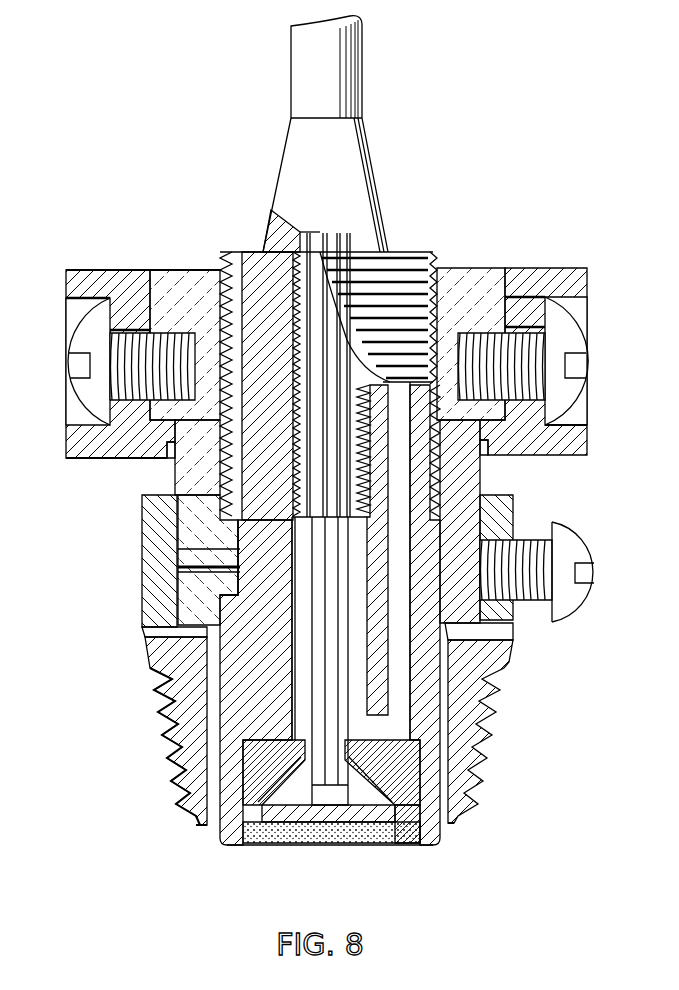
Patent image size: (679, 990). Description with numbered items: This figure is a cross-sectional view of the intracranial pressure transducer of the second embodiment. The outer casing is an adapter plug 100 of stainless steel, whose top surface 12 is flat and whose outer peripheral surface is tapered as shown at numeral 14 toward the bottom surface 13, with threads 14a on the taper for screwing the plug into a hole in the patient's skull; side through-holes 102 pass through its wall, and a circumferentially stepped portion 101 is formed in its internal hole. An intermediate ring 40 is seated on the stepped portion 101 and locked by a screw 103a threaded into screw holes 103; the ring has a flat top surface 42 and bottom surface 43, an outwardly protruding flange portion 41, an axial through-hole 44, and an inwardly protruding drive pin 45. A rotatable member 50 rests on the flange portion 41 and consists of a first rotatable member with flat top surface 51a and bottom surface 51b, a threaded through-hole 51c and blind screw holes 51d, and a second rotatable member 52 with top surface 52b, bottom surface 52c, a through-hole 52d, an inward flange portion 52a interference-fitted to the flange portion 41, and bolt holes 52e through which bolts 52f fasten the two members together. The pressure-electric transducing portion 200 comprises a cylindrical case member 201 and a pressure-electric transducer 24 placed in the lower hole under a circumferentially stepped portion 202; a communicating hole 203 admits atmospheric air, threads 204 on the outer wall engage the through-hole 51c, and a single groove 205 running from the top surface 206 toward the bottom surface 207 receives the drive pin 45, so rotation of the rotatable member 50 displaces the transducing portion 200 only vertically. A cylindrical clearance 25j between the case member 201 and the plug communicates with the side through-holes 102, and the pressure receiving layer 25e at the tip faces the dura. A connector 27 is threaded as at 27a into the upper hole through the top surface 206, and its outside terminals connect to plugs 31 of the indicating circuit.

The plugs 31 is at (350, 60).
The connector 27 is at (305, 145).
The threaded portion of connector 27a is at (295, 372).
The top surface 206 is at (265, 245).
The case member 201 is at (244, 256).
The pressure-electric transducing portion 200 is at (386, 252).
The threads 204 is at (432, 268).
The communicating hole 203 is at (398, 493).
The circumferentially stepped portion 202 is at (250, 745).
The bottom surface 207 is at (238, 848).
The pressure-electric transducer 24 is at (314, 845).
The pressure receiving layer 25e is at (385, 845).
The clearance 25j is at (450, 826).
The groove 205 is at (230, 600).
The through-hole 44 is at (220, 530).
The drive pin 45 is at (238, 562).
The adapter plug 100 is at (145, 556).
The circumferentially stepped portion 101 is at (185, 626).
The top surface 12 is at (150, 497).
The second rotatable member 52 is at (75, 275).
The flange portion 52a is at (160, 452).
The top surface 52b is at (110, 275).
The bottom surface 52c is at (74, 458).
The through-hole 52d is at (142, 282).
The bolt holes 52e is at (130, 325).
The bolts 52f is at (74, 385).
The rotatable member 50 is at (580, 284).
The top surface 51a is at (490, 268).
The bottom surface 51b is at (565, 410).
The through-hole 51c is at (440, 290).
The screw holes 51d is at (518, 325).
The top surface 42 is at (575, 430).
The flange portion 41 is at (493, 452).
The intermediate ring 40 is at (478, 478).
The screw holes 103 is at (500, 545).
The screw 103a is at (588, 546).
The bottom surface 43 is at (482, 628).
The side through-holes 102 is at (502, 655).
The tapered outer peripheral surface 14 is at (146, 656).
The threads 14a is at (160, 722).
The bottom surface 13 is at (205, 828).